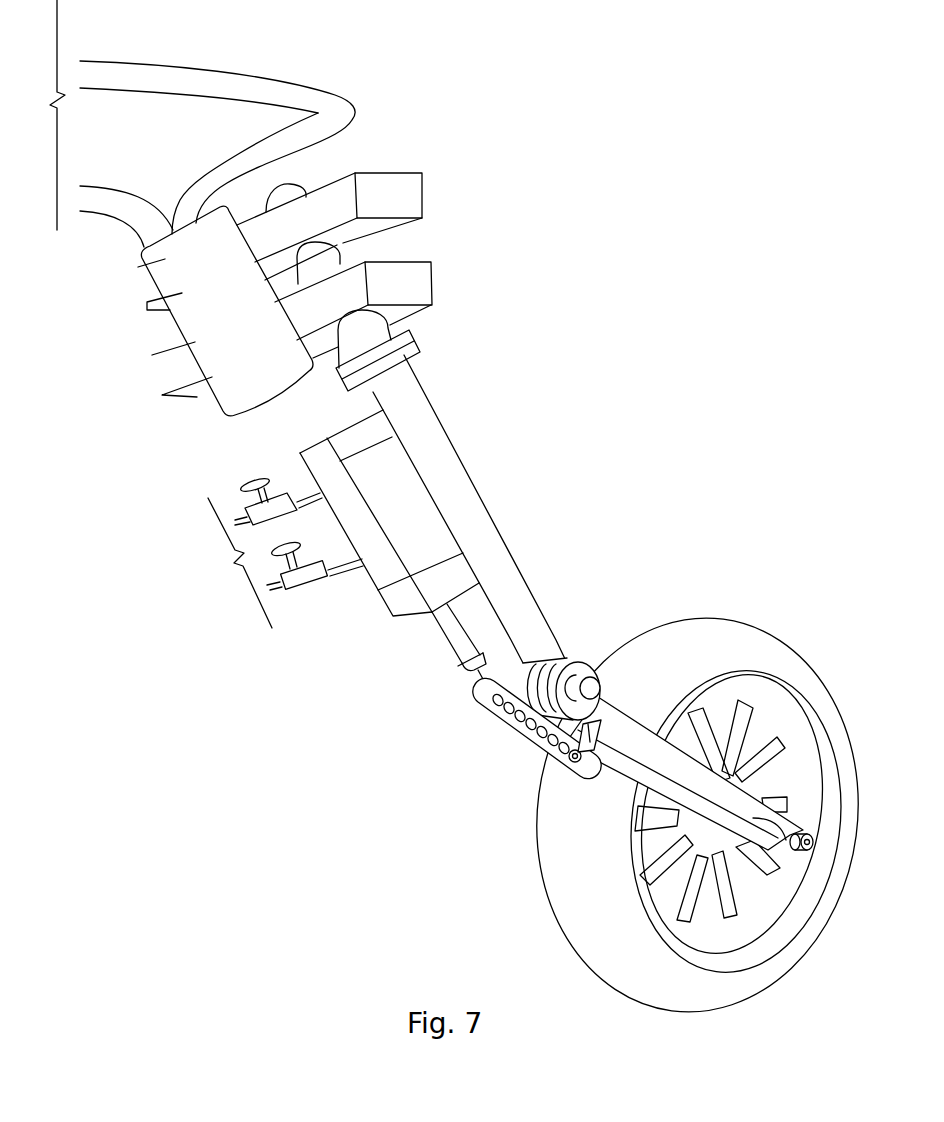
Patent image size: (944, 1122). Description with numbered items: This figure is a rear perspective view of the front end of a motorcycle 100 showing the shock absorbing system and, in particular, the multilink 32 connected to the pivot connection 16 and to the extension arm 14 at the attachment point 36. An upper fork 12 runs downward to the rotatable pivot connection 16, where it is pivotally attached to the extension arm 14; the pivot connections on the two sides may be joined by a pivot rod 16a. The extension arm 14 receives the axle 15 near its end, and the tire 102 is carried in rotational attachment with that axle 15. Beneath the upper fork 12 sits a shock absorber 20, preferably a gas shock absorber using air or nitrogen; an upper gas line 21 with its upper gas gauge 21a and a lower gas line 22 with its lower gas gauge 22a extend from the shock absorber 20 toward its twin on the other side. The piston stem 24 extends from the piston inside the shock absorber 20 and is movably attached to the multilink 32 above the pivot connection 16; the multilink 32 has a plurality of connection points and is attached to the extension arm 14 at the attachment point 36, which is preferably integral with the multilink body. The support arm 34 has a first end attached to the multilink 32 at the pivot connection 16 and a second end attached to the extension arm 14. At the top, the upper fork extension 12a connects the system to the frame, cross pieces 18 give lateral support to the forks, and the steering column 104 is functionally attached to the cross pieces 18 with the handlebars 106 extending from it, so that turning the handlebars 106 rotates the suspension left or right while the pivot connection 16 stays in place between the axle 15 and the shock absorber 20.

The motorcycle 100 is at (620, 420).
The tire 102 is at (603, 938).
The steering column 104 is at (197, 295).
The handlebars 106 is at (343, 110).
The upper fork 12 is at (443, 460).
The upper fork extension 12a is at (330, 267).
The extension arm 14 is at (785, 850).
The axle 15 is at (814, 842).
The pivot connection 16 is at (578, 660).
The pivot rod 16a is at (600, 689).
The cross piece 18 is at (405, 203).
The shock absorber 20 is at (372, 580).
The upper gas line 21 is at (296, 491).
The upper gas gauge 21a is at (250, 484).
The lower gas line 22 is at (340, 573).
The lower gas gauge 22a is at (278, 546).
The piston stem 24 is at (458, 643).
The multilink 32 is at (533, 740).
The support arm 34 is at (620, 780).
The attachment point 36 is at (584, 760).